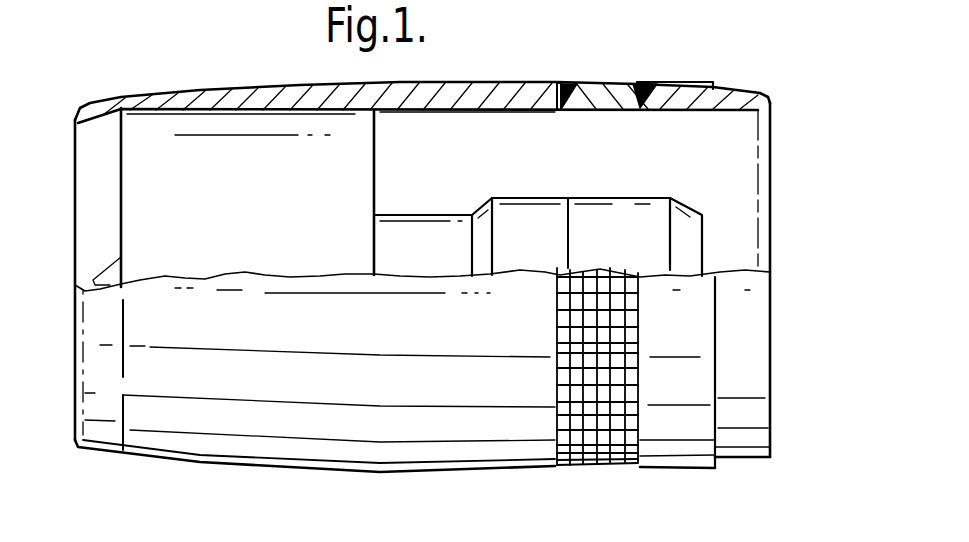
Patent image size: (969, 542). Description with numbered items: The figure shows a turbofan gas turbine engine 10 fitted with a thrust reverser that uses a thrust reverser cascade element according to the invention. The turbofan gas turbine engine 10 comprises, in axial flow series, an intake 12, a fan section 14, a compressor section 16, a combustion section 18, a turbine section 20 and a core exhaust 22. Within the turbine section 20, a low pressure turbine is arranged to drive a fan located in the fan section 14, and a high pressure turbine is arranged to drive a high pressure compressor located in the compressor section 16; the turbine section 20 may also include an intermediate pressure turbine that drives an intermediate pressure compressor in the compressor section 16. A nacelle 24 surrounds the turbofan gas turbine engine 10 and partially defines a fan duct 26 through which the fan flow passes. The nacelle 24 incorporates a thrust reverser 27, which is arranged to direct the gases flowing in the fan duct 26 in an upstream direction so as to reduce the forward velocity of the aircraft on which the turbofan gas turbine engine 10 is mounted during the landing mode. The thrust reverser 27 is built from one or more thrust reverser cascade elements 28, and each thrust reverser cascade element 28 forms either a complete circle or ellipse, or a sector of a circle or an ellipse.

The turbofan gas turbine engine 10 is at (430, 132).
The intake 12 is at (105, 183).
The fan section 14 is at (237, 123).
The compressor section 16 is at (428, 230).
The combustion section 18 is at (525, 208).
The turbine section 20 is at (623, 208).
The core exhaust 22 is at (688, 218).
The nacelle 24 is at (685, 83).
The fan duct 26 is at (503, 143).
The thrust reverser 27 is at (618, 80).
The thrust reverser cascade element 28 is at (568, 97).